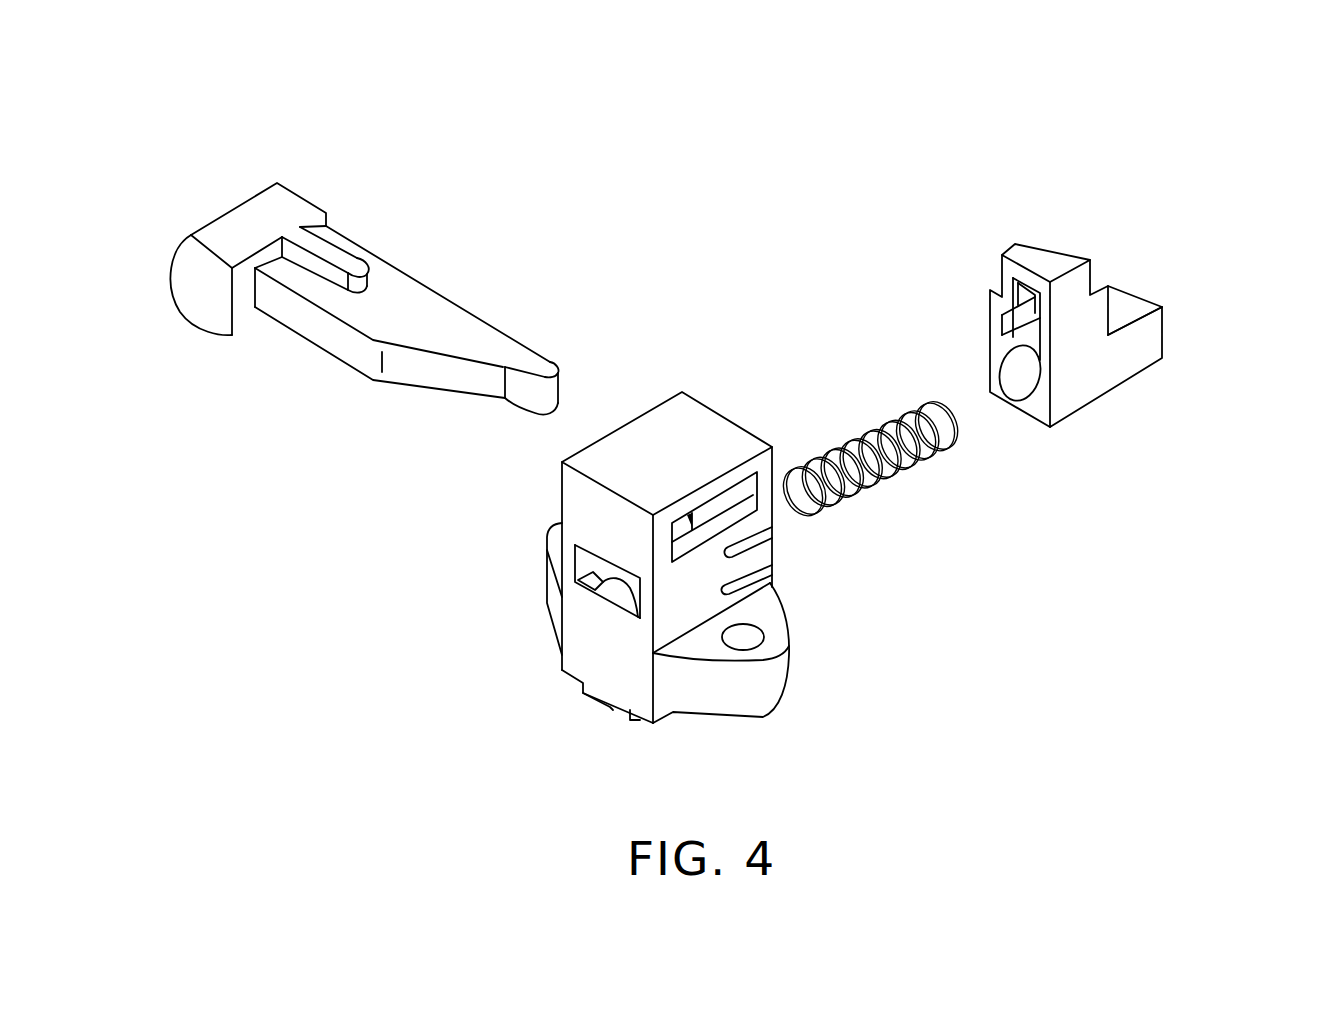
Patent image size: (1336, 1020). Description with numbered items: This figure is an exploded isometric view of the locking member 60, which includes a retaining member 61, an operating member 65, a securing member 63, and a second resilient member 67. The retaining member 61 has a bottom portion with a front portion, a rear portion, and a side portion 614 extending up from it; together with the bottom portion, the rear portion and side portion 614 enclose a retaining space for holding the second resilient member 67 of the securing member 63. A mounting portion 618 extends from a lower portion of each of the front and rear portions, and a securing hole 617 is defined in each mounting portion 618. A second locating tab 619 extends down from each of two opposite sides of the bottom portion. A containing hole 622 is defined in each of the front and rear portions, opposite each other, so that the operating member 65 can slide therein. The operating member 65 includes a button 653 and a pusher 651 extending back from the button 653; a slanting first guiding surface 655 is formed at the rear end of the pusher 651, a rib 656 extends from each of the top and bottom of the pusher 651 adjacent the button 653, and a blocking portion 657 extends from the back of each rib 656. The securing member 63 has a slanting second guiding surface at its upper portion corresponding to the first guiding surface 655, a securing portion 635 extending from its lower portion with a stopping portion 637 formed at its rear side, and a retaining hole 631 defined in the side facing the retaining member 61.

The locking member 60 is at (948, 64).
The retaining member 61 is at (675, 593).
The side portion 614 is at (593, 652).
The securing hole 617 is at (740, 635).
The mounting portion 618 is at (710, 692).
The second locating tab 619 is at (610, 707).
The containing hole 622 is at (732, 500).
The securing member 63 is at (1076, 314).
The retaining hole 631 is at (1015, 370).
The securing portion 635 is at (1143, 302).
The stopping portion 637 is at (1150, 340).
The operating member 65 is at (362, 290).
The pusher 651 is at (441, 320).
The button 653 is at (243, 218).
The first guiding surface 655 is at (438, 376).
The rib 656 is at (296, 245).
The blocking portion 657 is at (343, 256).
The second resilient member 67 is at (913, 465).